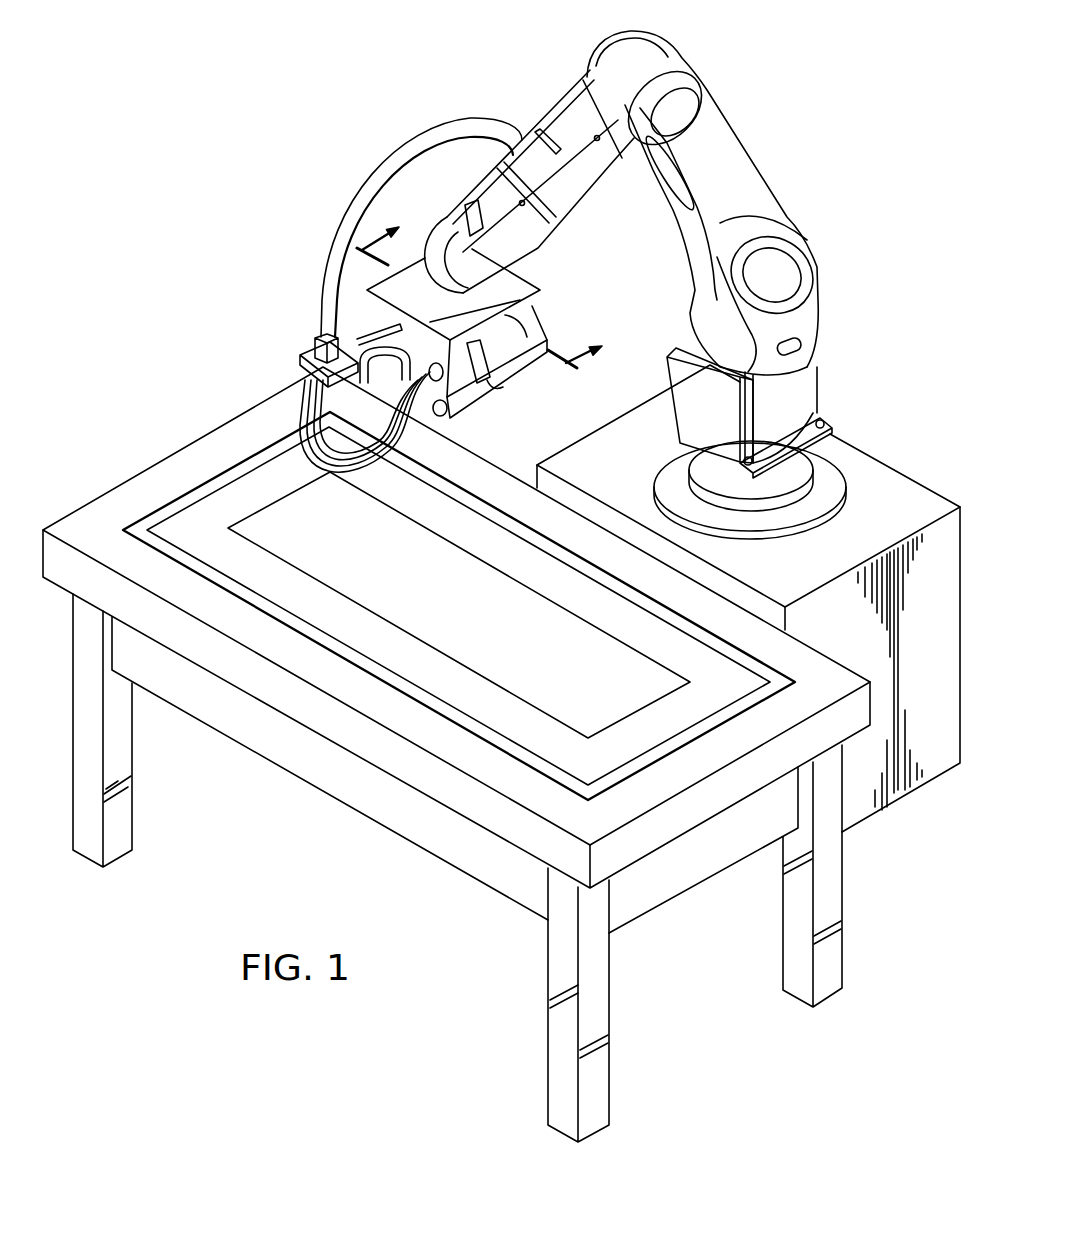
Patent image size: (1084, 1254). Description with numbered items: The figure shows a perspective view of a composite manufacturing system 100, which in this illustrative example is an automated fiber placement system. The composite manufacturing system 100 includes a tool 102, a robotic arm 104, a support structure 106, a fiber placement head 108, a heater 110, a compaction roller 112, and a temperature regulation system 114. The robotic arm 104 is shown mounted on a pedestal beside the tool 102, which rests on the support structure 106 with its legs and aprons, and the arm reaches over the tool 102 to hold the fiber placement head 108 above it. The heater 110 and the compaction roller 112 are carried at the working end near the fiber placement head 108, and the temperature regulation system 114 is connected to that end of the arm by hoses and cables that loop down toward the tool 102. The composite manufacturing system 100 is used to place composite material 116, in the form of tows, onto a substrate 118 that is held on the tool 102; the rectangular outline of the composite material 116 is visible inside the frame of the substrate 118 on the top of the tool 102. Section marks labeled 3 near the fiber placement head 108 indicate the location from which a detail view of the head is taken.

The composite manufacturing system 100 is at (314, 190).
The tool 102 is at (552, 806).
The robotic arm 104 is at (760, 173).
The support structure 106 is at (412, 806).
The fiber placement head 108 is at (562, 268).
The heater 110 is at (531, 401).
The compaction roller 112 is at (355, 393).
The temperature regulation system 114 is at (389, 412).
The composite material 116 is at (480, 621).
The substrate 118 is at (190, 517).
The section line for FIG. 3 is at (490, 287).